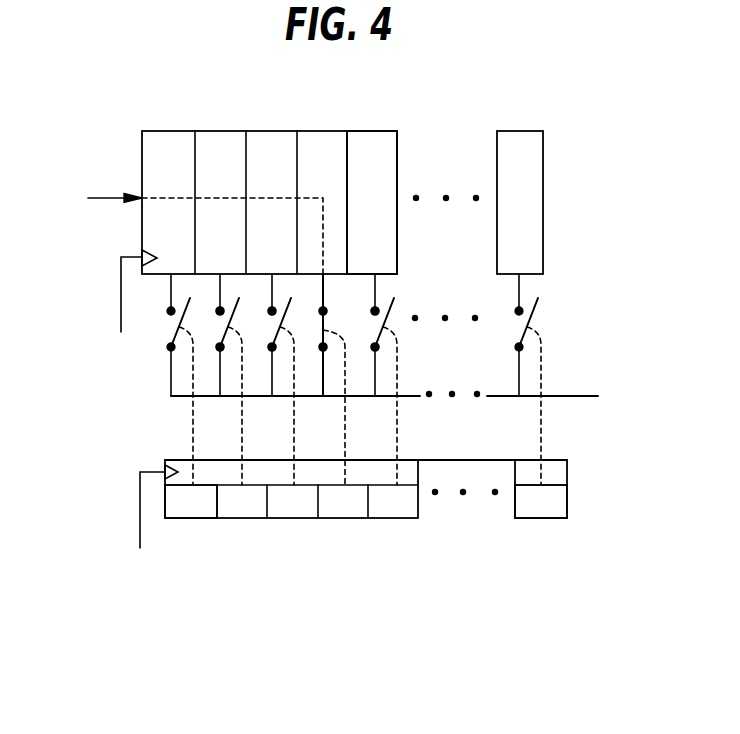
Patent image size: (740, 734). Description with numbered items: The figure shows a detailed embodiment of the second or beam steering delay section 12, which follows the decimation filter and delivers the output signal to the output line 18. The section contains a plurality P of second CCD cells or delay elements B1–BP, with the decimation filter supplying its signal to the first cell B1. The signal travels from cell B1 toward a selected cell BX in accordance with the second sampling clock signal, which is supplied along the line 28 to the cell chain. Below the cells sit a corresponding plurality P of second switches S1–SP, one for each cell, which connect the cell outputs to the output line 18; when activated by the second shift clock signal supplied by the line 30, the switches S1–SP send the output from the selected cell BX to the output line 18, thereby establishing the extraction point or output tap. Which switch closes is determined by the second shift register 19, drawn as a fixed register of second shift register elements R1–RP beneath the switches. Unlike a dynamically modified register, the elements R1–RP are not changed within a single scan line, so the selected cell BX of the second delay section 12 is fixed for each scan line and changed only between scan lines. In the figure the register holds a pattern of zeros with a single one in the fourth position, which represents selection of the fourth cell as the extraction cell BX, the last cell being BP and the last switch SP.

The first second-section CCD cell B1 is at (269, 183).
The selected cell BX is at (325, 131).
The last second-section CCD cell BP is at (520, 182).
The line 28 is at (119, 300).
The first second switch S1 is at (167, 328).
The last second switch SP is at (533, 320).
The second delay section 12 is at (358, 460).
The output line 18 is at (573, 391).
The second shift register 19 is at (382, 524).
The first second shift register element R1 is at (185, 520).
The last second shift register element RP is at (543, 519).
The line 30 is at (138, 500).